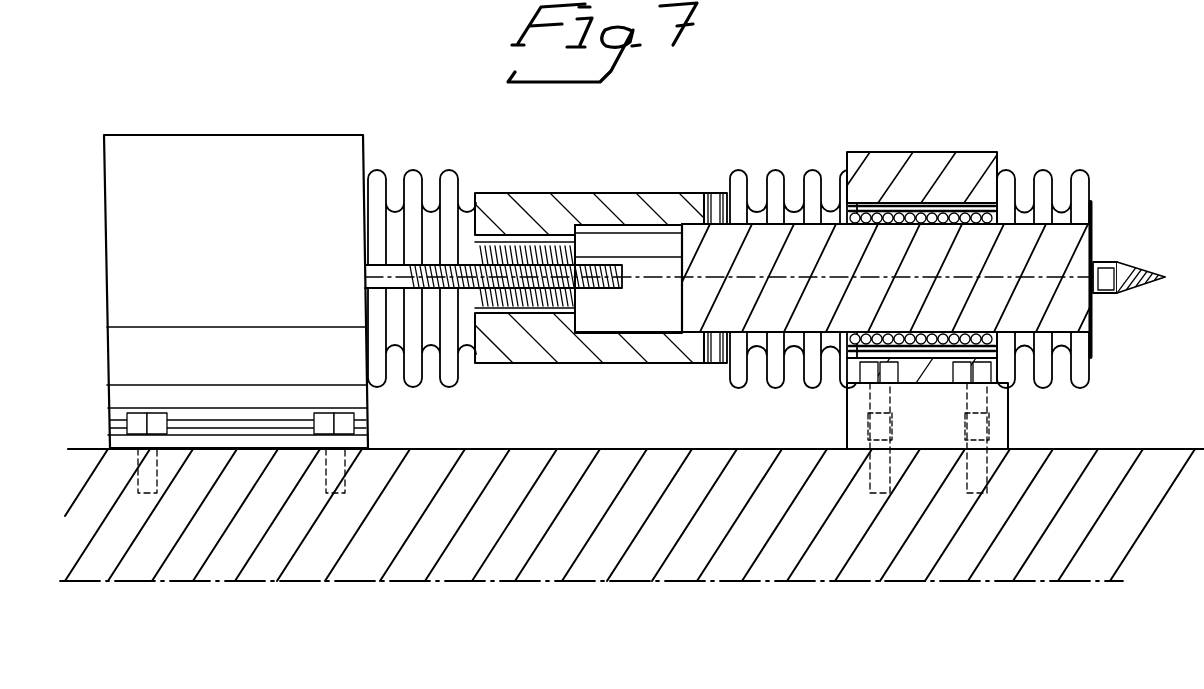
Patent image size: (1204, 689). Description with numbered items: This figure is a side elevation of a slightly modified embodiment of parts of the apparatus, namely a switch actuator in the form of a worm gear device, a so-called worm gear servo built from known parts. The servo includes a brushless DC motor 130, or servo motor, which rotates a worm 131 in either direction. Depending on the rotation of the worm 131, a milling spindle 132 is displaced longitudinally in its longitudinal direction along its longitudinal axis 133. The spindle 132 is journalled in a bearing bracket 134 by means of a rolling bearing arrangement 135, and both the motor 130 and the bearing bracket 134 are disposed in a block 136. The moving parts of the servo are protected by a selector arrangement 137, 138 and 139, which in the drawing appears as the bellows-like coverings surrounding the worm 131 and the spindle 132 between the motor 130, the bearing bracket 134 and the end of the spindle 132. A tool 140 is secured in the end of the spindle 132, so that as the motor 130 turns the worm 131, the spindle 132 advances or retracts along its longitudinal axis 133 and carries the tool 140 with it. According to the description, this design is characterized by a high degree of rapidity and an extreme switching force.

The brushless DC motor 130 is at (172, 148).
The worm 131 is at (532, 240).
The milling spindle 132 is at (785, 230).
The longitudinal axis 133 is at (1088, 257).
The bearing bracket 134 is at (1002, 421).
The rolling bearing arrangement 135 is at (888, 207).
The block 136 is at (655, 566).
The selector arrangement 137 is at (409, 169).
The selector arrangement 138 is at (735, 170).
The selector arrangement 139 is at (1042, 170).
The tool 140 is at (1142, 273).